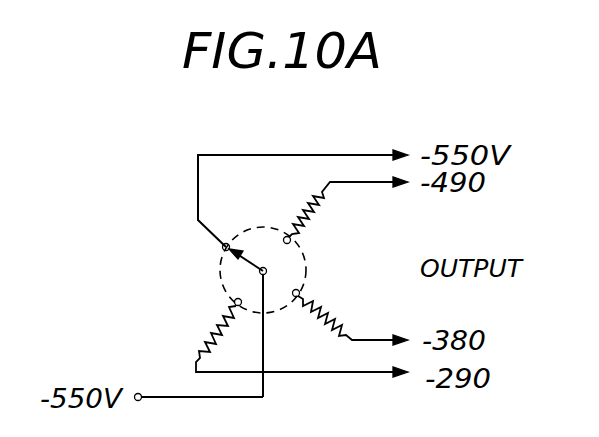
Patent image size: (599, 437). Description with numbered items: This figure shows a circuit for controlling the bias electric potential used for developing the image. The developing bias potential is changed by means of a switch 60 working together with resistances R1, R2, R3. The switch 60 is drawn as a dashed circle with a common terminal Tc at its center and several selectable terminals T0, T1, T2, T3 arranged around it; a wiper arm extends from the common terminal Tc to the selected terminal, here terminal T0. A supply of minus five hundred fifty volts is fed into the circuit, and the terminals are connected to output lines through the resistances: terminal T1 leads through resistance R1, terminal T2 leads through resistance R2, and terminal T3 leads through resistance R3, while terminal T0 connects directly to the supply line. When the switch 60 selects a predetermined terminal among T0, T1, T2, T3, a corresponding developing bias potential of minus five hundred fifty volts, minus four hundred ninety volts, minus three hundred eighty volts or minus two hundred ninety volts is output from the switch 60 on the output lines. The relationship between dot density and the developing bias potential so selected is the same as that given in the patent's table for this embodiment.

The switch 60 is at (220, 266).
The wiper terminal T0 is at (226, 243).
The terminal 1 T1 is at (286, 237).
The terminal 2 T2 is at (295, 297).
The terminal 3 T3 is at (238, 306).
The common terminal Tc is at (267, 271).
The resistance R1 is at (348, 210).
The resistance R2 is at (353, 319).
The resistance R3 is at (294, 341).